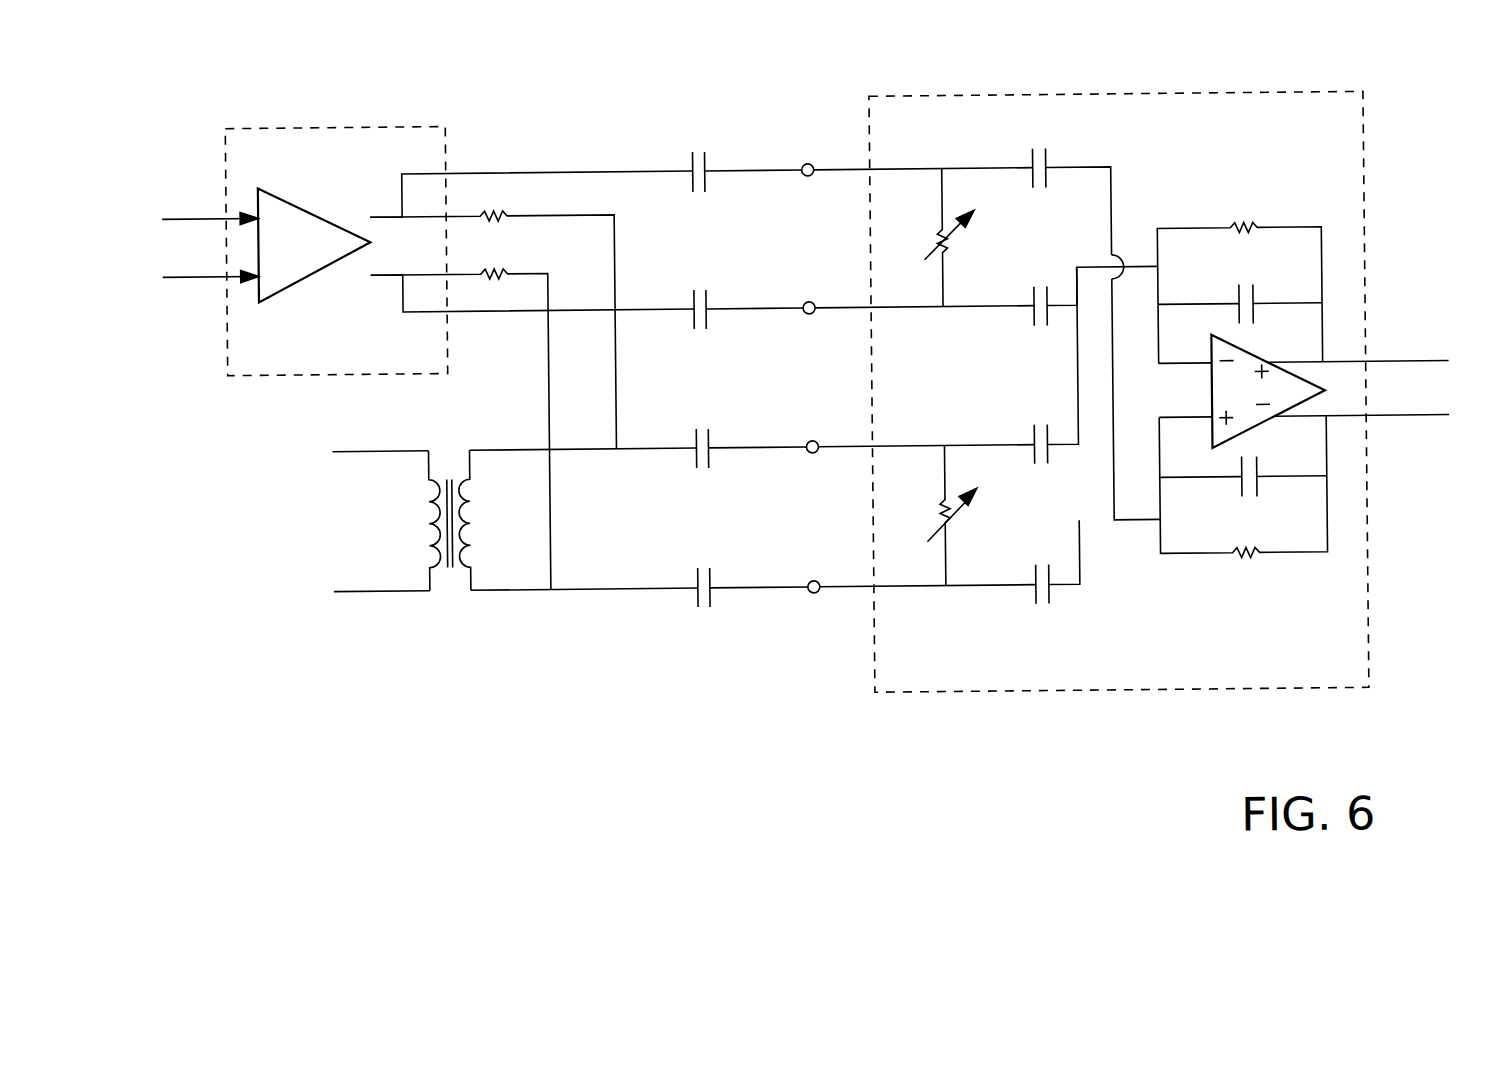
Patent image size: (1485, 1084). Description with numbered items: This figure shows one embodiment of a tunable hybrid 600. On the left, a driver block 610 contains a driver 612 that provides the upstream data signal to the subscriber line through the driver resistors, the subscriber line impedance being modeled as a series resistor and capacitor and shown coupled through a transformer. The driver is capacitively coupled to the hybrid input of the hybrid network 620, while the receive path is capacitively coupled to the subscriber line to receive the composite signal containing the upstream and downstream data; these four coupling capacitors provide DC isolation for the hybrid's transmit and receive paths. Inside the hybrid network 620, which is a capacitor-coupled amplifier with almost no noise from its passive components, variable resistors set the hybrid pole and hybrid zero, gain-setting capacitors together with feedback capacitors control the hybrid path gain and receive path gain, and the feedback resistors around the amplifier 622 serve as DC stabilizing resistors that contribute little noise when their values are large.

The line driver and hybrid circuit 600 is at (813, 374).
The driver 610 is at (368, 123).
The driver 612 is at (300, 200).
The hybrid network 620 is at (903, 98).
The amplifier 622 is at (1268, 391).